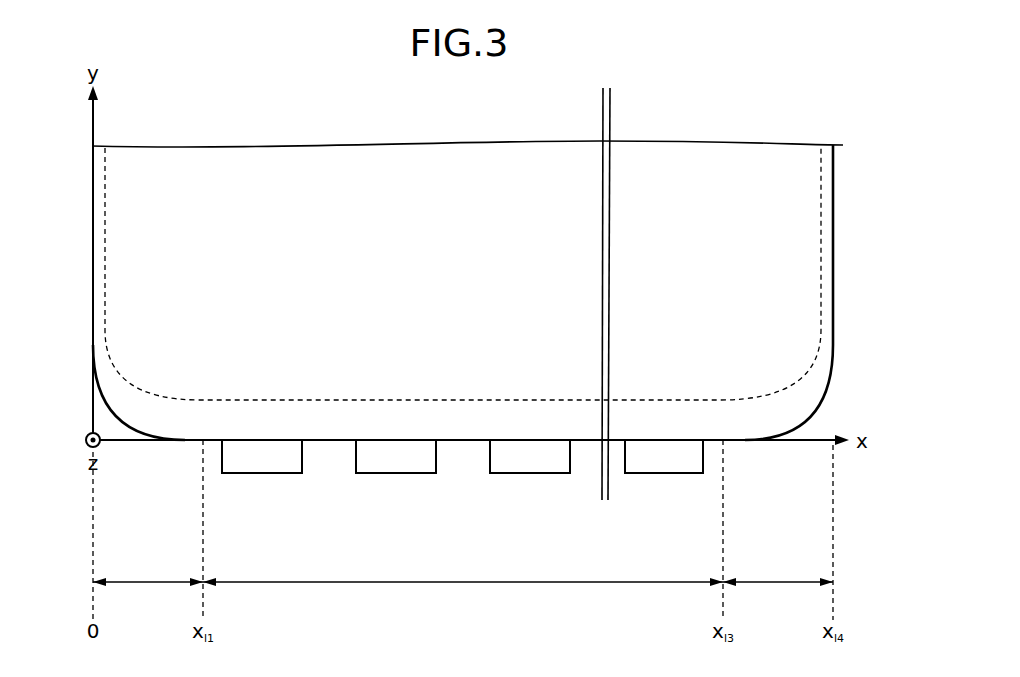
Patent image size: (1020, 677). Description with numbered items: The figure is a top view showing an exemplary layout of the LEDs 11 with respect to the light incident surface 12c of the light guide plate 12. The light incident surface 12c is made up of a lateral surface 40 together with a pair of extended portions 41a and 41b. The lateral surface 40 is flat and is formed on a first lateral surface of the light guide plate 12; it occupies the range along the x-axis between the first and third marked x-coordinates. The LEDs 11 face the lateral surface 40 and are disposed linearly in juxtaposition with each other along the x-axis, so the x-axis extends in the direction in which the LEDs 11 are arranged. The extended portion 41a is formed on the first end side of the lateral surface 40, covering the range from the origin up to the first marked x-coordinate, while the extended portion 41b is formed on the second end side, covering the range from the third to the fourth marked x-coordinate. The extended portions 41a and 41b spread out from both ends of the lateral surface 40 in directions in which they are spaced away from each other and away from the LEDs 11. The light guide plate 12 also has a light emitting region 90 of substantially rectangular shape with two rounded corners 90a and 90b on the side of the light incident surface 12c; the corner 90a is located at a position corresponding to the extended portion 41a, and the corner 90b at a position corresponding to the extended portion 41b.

The light emitting region 90 is at (386, 182).
The corner 90a is at (121, 375).
The corner 90b is at (802, 378).
The LEDs 11 is at (264, 474).
The lateral surface 40 is at (329, 441).
The light guide plate 12 is at (585, 430).
The light incident surface 12c is at (519, 614).
The extended portion 41a is at (141, 441).
The extended portion 41b is at (785, 441).